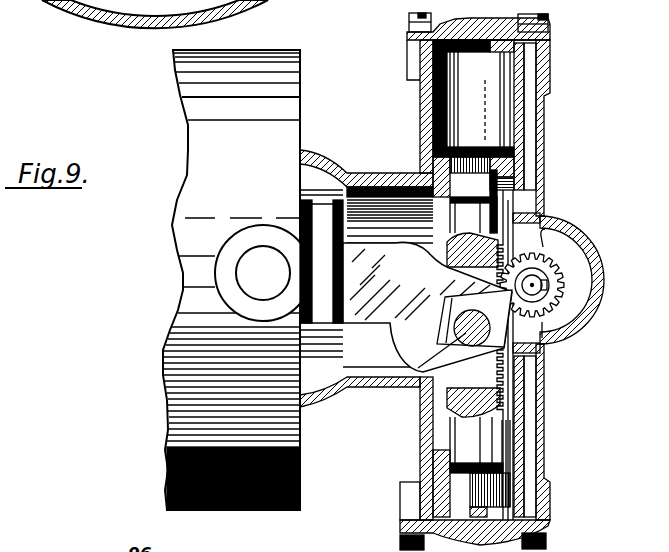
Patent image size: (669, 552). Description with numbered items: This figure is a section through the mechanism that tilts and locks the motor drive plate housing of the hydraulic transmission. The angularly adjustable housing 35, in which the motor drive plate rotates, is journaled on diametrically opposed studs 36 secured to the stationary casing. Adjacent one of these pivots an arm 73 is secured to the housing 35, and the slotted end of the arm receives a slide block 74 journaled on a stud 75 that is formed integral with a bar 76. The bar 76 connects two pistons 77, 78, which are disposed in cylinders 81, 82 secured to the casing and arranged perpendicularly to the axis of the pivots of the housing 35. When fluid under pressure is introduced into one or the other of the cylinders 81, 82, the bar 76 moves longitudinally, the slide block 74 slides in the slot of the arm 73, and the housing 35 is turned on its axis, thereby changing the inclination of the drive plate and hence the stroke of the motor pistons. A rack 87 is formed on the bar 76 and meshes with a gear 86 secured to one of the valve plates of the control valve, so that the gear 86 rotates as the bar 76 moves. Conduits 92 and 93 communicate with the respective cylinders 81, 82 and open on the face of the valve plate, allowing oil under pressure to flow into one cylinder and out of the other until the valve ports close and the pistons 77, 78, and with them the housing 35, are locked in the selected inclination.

The angularly adjustable housing 35 is at (285, 95).
The studs 36 is at (263, 273).
The arm 73 is at (427, 307).
The slide block 74 is at (540, 360).
The stud 75 is at (413, 380).
The bar 76 is at (483, 223).
The piston 77 is at (525, 172).
The piston 78 is at (540, 477).
The cylinder 81 is at (510, 112).
The cylinder 82 is at (508, 440).
The gear 86 is at (560, 277).
The rack 87 is at (547, 333).
The conduit 92 is at (527, 412).
The conduit 93 is at (530, 77).